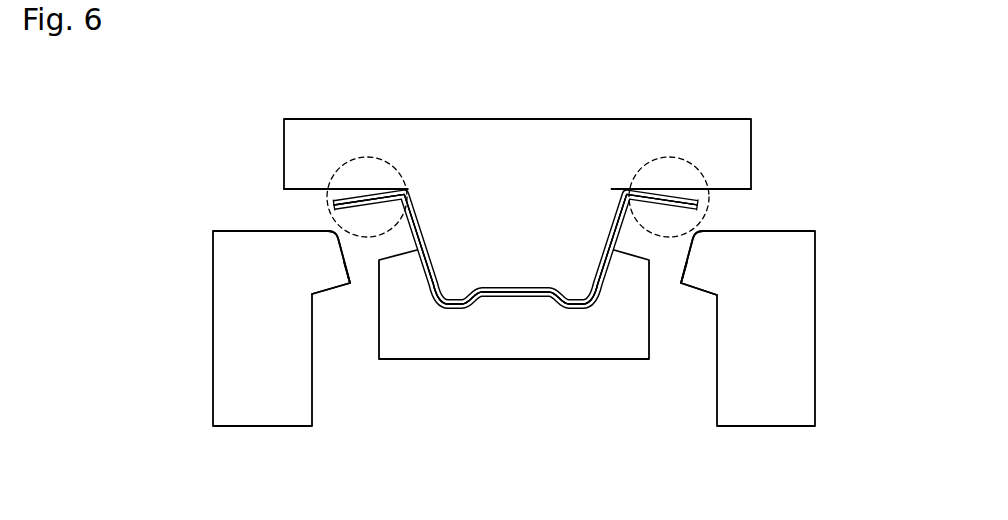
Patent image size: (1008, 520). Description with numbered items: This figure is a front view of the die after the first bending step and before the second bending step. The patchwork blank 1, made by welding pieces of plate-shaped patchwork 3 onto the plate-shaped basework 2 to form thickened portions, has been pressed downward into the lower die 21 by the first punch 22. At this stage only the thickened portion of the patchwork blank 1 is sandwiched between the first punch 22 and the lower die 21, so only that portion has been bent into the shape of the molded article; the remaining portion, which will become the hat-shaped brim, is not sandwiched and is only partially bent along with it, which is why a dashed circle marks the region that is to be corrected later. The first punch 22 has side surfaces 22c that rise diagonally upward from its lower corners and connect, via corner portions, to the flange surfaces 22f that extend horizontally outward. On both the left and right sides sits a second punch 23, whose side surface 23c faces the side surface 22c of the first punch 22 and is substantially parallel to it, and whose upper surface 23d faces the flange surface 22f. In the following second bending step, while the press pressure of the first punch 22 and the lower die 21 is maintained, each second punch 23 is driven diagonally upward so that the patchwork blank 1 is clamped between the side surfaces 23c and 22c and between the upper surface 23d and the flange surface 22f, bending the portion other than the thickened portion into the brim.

The patchwork blank 1 is at (643, 389).
The basework 2 is at (573, 309).
The patchwork 3 is at (598, 309).
The lower die 21 is at (513, 353).
The first punch 22 is at (284, 149).
The side surface 22c is at (417, 218).
The flange surface 22f is at (300, 190).
The second punch 23 is at (213, 300).
The side surface 23c is at (347, 258).
The upper surface 23d is at (247, 231).